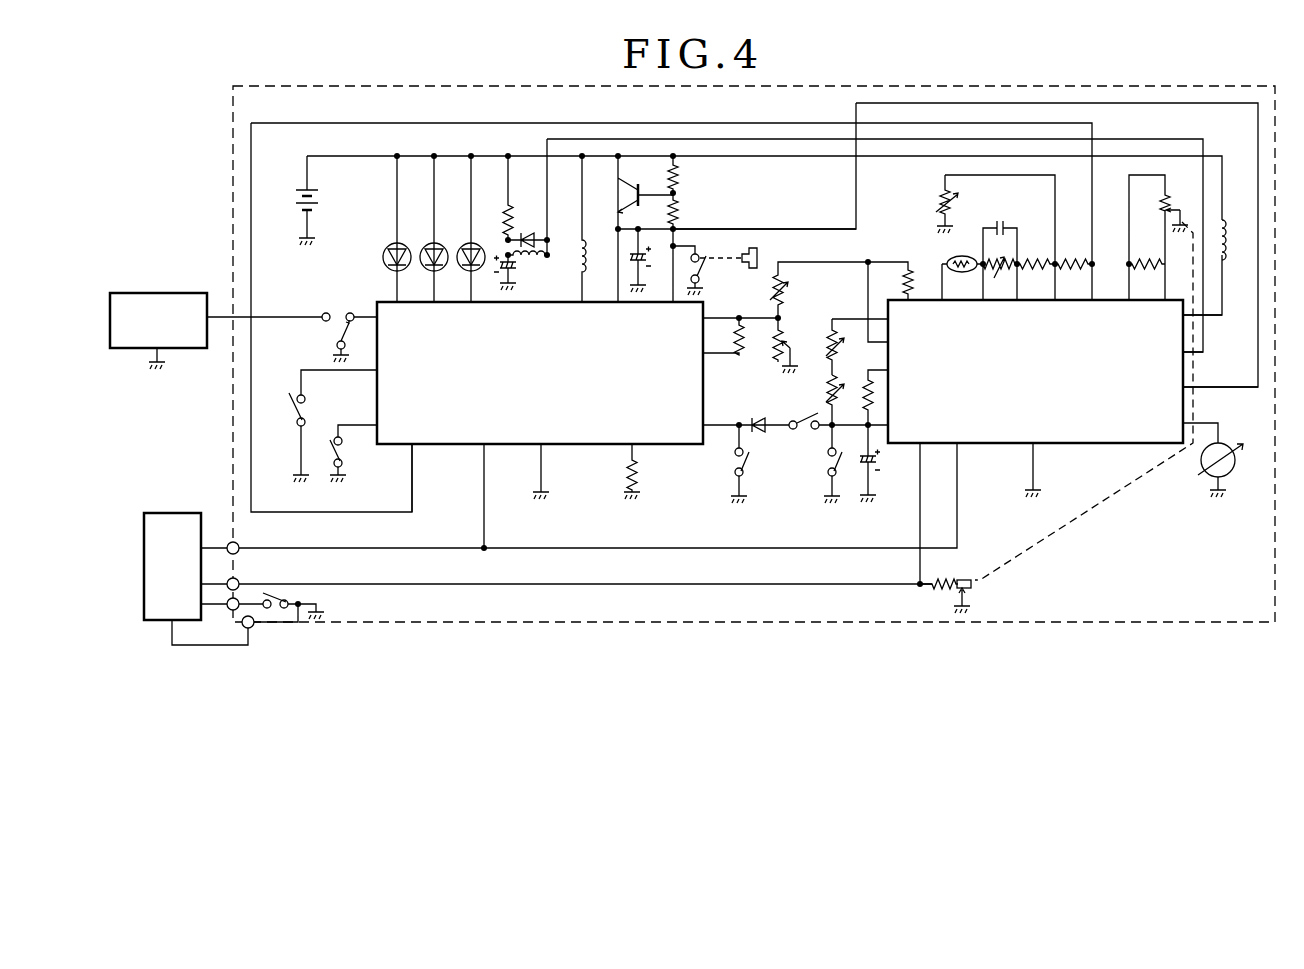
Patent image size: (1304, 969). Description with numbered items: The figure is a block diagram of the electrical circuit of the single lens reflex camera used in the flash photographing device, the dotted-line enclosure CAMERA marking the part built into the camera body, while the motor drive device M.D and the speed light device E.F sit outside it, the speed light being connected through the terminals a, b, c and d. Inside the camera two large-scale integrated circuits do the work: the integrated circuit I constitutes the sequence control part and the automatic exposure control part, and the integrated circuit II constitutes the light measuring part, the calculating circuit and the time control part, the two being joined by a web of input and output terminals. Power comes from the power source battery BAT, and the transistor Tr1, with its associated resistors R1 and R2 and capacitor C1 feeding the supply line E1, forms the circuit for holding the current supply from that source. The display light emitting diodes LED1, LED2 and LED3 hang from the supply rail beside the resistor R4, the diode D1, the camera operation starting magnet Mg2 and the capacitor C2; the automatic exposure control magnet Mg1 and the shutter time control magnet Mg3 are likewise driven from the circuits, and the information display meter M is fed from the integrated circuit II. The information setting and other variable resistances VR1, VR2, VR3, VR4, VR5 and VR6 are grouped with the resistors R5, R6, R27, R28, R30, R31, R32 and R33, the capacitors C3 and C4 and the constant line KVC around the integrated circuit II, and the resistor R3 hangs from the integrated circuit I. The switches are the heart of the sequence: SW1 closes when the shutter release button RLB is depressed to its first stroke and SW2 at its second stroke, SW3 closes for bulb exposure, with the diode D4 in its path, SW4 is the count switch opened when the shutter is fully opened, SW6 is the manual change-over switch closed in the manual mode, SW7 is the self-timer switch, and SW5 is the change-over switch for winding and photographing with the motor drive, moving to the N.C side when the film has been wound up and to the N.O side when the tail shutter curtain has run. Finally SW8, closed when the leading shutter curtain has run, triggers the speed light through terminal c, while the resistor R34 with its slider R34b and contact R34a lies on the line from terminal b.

The camera body CAMERA is at (754, 354).
The motor drive device M.D is at (216, 331).
The speed light device E.F is at (172, 566).
The integrated circuit I is at (542, 373).
The integrated circuit II is at (1038, 371).
The power source battery BAT is at (320, 199).
The display light emitting diode LED1 is at (406, 268).
The display light emitting diode LED2 is at (443, 268).
The display light emitting diode LED3 is at (480, 268).
The resistor R1 is at (669, 177).
The resistor R2 is at (669, 216).
The resistor R3 is at (638, 474).
The resistor R4 is at (504, 221).
The resistor R5 is at (744, 350).
The variable resistor R6 is at (784, 299).
The resistor R27 is at (1040, 272).
The resistor R28 is at (904, 286).
The resistor R30 is at (1078, 272).
The resistor R31 is at (1151, 272).
The resistor R32 is at (865, 400).
The photoresistor R33 is at (962, 272).
The resistor R34 is at (948, 574).
The resistor slider contact R34a is at (954, 600).
The resistor slider R34b is at (964, 578).
The variable resistance VR1 is at (792, 344).
The variable resistance VR2 is at (999, 278).
The variable resistance VR3 is at (995, 219).
The variable resistance VR4 is at (1160, 208).
The variable resistance VR5 is at (828, 320).
The variable resistance VR6 is at (828, 382).
The capacitor C1 is at (649, 262).
The capacitor C2 is at (496, 256).
The capacitor C3 is at (878, 462).
The capacitor C4 is at (1000, 224).
The diode D1 is at (528, 234).
The diode D4 is at (756, 416).
The transistor Tr1 is at (628, 191).
The automatic exposure control magnet Mg1 is at (586, 264).
The camera operation starting magnet Mg2 is at (522, 258).
The shutter time control magnet Mg3 is at (1226, 256).
The power supply line E1 is at (769, 229).
The shutter release button RLB is at (757, 252).
The constant voltage line KVC is at (834, 262).
The switch SW1 is at (704, 265).
The switch SW2 is at (747, 460).
The switch SW3 is at (803, 417).
The count switch SW4 is at (828, 462).
The change over switch SW5 is at (333, 329).
The manual change over switch SW6 is at (293, 409).
The self-timer photographing switch SW7 is at (340, 452).
The switch SW8 is at (285, 595).
The switch contact side N.O is at (327, 306).
The switch contact side N.C is at (354, 306).
The information display meter M is at (1226, 476).
The terminal a is at (227, 542).
The terminal b is at (227, 577).
The terminal c is at (225, 599).
The terminal d is at (242, 627).